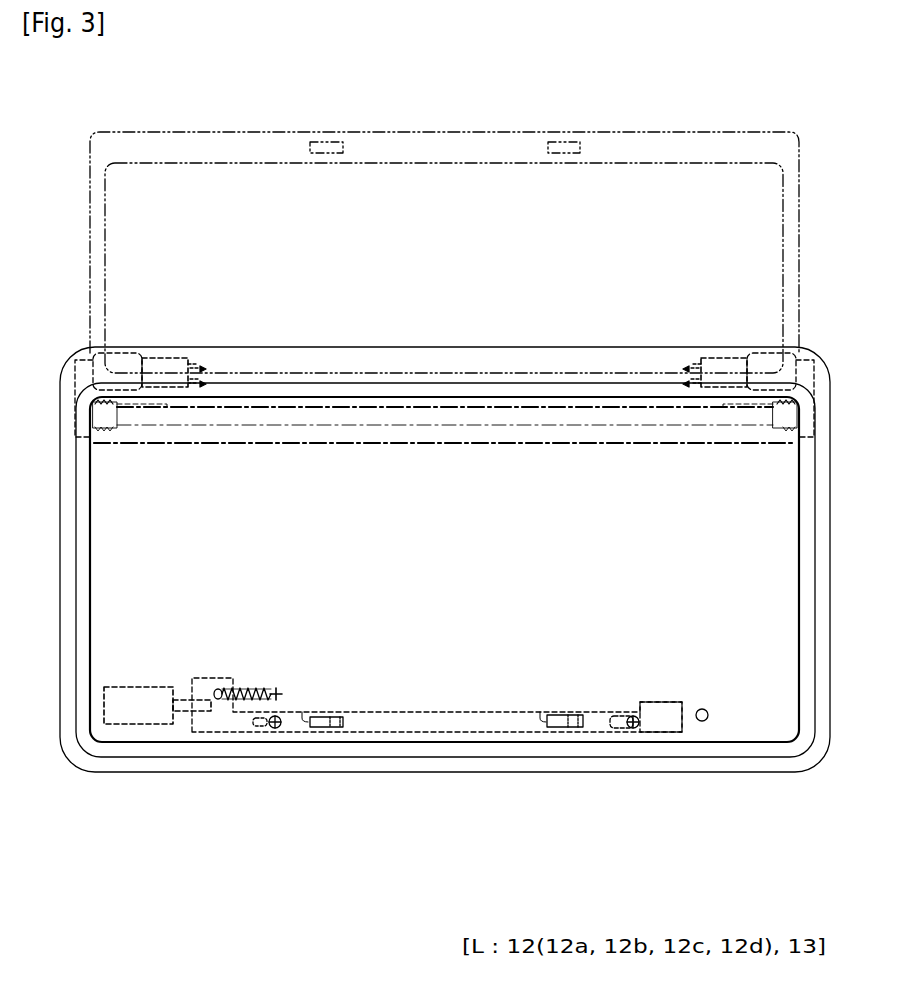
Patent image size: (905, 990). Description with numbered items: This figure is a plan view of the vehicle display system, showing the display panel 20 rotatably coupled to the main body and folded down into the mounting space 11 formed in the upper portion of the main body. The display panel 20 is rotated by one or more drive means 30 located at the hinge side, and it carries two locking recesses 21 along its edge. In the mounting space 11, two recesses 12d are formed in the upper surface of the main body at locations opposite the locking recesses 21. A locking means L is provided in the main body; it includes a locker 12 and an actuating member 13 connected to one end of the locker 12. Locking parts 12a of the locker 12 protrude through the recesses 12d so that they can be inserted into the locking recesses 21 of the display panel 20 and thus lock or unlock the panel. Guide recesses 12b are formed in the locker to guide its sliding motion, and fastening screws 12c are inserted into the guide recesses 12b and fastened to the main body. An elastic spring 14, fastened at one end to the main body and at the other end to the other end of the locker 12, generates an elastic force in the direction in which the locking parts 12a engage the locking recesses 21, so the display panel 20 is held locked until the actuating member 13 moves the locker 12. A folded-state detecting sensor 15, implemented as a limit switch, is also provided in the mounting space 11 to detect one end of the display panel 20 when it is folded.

The mounting space 11 is at (758, 695).
The locker 12 is at (425, 732).
The locking parts 12a is at (343, 722).
The guide recesses 12b is at (617, 728).
The fastening screws 12c is at (640, 720).
The recesses 12d is at (312, 720).
The actuating member 13 is at (140, 725).
The elastic spring 14 is at (250, 686).
The folded-state detecting sensor 15 is at (703, 721).
The display panel 20 is at (264, 129).
The locking recesses 21 is at (343, 147).
The drive means 30 is at (79, 351).
The locking means L is at (211, 659).